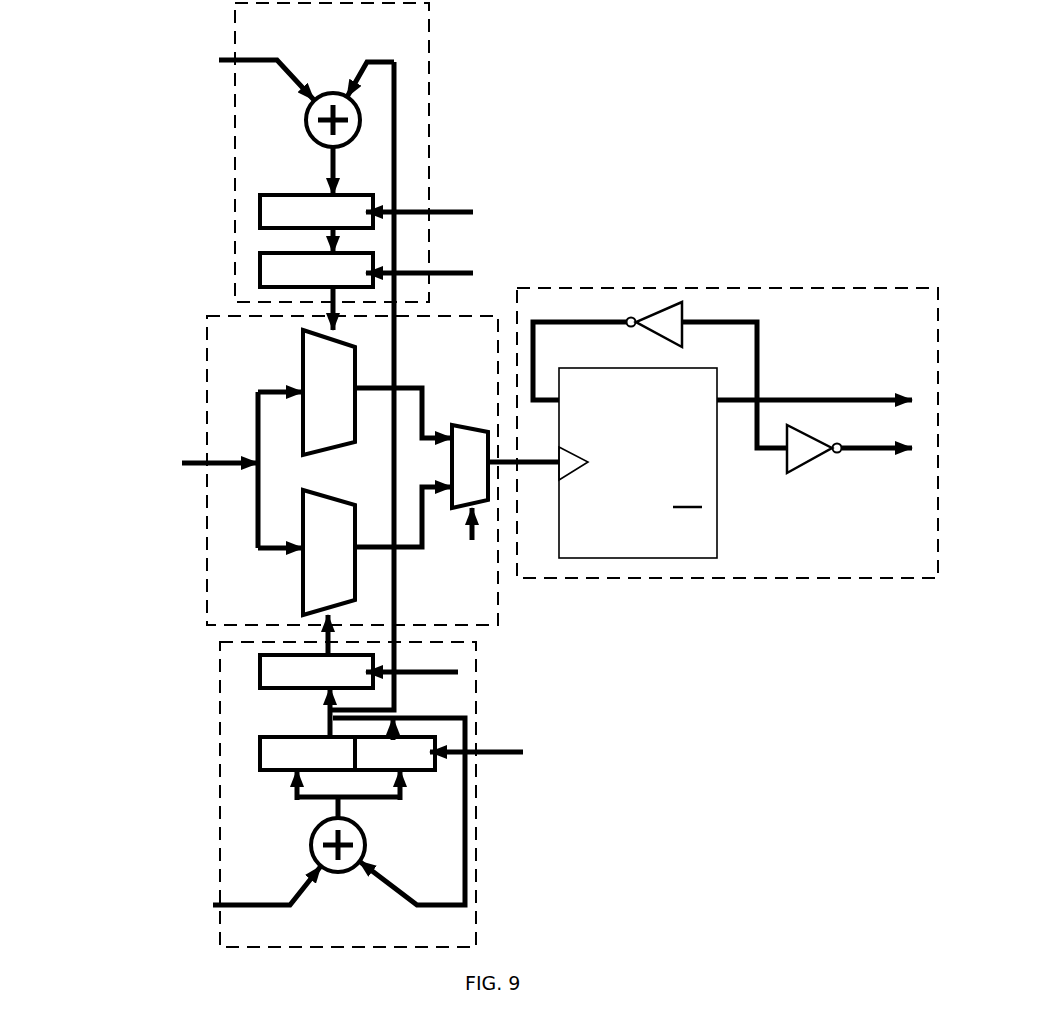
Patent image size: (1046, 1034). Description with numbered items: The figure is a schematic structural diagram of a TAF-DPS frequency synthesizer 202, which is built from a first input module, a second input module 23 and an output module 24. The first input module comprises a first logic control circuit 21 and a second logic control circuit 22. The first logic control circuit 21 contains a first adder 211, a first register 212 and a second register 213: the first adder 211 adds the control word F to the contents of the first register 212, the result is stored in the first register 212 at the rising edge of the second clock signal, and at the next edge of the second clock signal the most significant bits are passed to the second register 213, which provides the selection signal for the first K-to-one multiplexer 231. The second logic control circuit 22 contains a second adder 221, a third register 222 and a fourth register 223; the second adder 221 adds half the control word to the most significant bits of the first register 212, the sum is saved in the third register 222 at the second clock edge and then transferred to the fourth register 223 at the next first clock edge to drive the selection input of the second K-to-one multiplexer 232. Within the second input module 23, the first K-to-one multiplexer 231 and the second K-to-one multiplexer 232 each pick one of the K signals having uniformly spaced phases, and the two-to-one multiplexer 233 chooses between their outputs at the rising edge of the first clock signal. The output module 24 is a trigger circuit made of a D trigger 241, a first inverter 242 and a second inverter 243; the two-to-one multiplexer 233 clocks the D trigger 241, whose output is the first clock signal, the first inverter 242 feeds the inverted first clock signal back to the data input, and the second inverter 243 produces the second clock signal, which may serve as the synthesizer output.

The frequency synthesizer / clock generation circuit 202 is at (84, 69).
The first logic control circuit 21 is at (370, 794).
The first adder 211 is at (363, 840).
The first register 212 is at (258, 753).
The second register 213 is at (258, 672).
The second logic control circuit 22 is at (360, 166).
The second adder 221 is at (361, 120).
The third register 222 is at (362, 194).
The fourth register 223 is at (258, 257).
The second input module 23 is at (370, 485).
The first K-to-1 multiplexer 231 is at (300, 578).
The second K-to-1 multiplexer 232 is at (358, 375).
The 2-to-1 multiplexer 233 is at (463, 427).
The output module 24 is at (727, 421).
The D trigger 241 is at (717, 527).
The first inverter 242 is at (684, 302).
The second inverter 243 is at (813, 463).